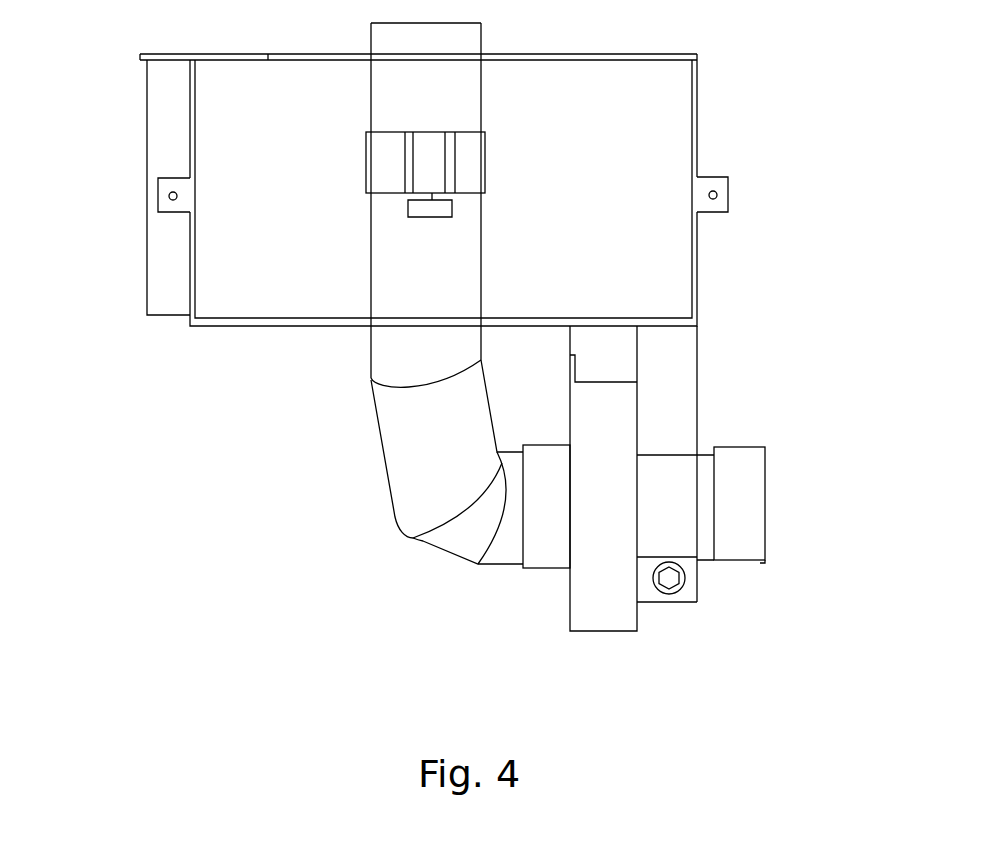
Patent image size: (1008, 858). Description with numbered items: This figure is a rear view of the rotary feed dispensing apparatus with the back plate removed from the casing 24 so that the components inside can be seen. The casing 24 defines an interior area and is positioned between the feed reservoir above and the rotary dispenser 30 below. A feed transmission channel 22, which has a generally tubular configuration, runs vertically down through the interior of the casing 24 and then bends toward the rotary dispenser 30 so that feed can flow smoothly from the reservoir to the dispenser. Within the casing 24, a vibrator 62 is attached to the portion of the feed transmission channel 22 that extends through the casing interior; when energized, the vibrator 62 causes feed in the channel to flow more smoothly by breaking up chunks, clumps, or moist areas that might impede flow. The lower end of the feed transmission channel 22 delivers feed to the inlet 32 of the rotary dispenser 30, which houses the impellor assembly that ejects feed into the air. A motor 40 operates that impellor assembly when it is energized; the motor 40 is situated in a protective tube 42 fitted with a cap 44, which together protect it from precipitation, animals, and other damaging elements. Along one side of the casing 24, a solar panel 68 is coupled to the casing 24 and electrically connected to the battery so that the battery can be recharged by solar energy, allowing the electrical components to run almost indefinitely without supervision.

The feed transmission channel 22 is at (472, 263).
The casing 24 is at (698, 100).
The rotary dispenser 30 is at (603, 602).
The inlet 32 is at (545, 555).
The motor 40 is at (700, 455).
The protective tube 42 is at (685, 545).
The cap 44 is at (765, 497).
The vibrator 62 is at (473, 161).
The solar panel 68 is at (157, 100).